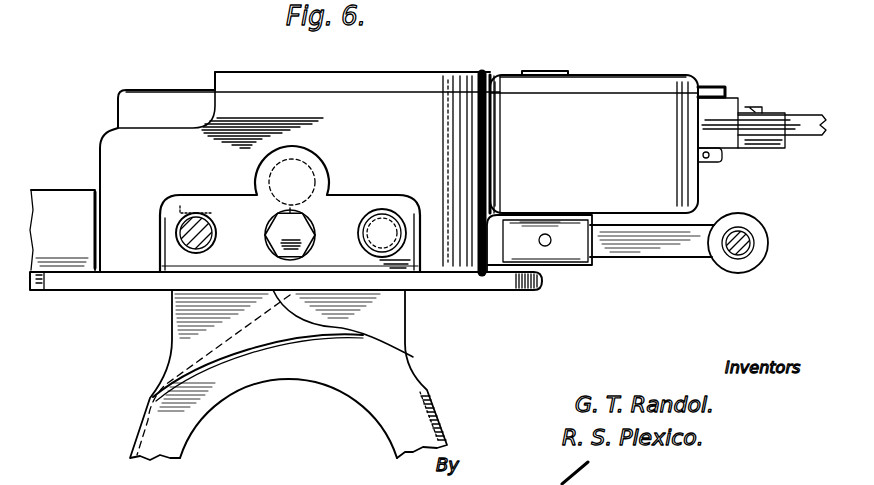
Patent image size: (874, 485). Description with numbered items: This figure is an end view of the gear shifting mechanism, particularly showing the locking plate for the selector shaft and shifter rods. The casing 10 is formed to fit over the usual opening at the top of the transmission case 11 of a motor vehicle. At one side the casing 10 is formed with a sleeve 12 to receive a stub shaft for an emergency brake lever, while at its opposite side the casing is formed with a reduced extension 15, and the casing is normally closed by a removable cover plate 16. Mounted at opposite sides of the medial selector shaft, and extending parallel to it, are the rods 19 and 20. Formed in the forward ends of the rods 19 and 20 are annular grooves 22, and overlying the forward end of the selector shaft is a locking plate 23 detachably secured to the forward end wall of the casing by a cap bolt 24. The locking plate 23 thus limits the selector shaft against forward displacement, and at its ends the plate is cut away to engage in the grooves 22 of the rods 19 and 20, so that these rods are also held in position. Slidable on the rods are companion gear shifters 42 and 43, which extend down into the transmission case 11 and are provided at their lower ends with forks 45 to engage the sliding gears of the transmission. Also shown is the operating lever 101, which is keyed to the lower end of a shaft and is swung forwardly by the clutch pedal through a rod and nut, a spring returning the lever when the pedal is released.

The casing 10 is at (300, 172).
The transmission case 11 is at (457, 283).
The sleeve 12 is at (62, 230).
The reduced extension 15 is at (658, 144).
The removable cover plate 16 is at (630, 80).
The rod 19 is at (394, 233).
The rod 20 is at (203, 212).
The annular grooves 22 is at (178, 239).
The locking plate 23 is at (347, 200).
The cap bolt 24 is at (294, 235).
The gear shifter 42 is at (391, 326).
The gear shifter 43 is at (176, 311).
The forks 45 is at (382, 408).
The operating lever 101 is at (643, 248).